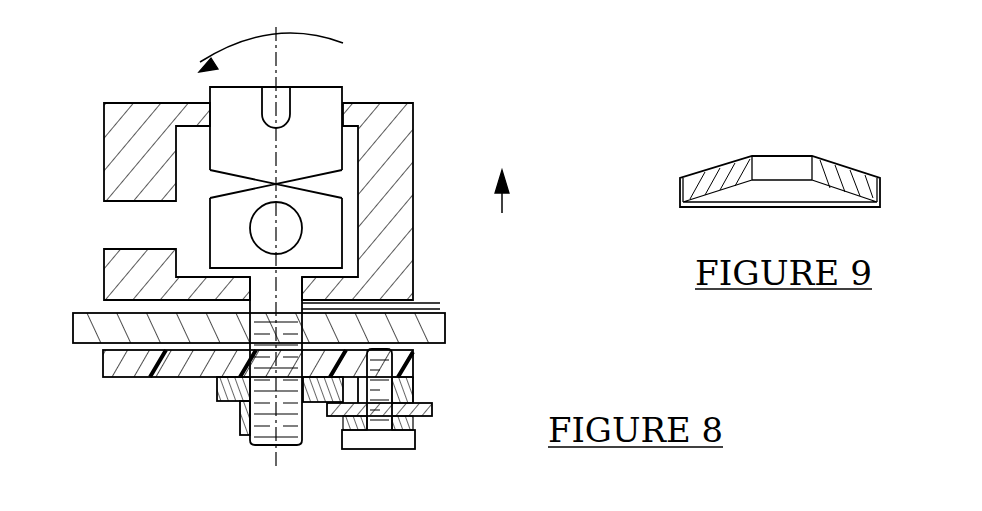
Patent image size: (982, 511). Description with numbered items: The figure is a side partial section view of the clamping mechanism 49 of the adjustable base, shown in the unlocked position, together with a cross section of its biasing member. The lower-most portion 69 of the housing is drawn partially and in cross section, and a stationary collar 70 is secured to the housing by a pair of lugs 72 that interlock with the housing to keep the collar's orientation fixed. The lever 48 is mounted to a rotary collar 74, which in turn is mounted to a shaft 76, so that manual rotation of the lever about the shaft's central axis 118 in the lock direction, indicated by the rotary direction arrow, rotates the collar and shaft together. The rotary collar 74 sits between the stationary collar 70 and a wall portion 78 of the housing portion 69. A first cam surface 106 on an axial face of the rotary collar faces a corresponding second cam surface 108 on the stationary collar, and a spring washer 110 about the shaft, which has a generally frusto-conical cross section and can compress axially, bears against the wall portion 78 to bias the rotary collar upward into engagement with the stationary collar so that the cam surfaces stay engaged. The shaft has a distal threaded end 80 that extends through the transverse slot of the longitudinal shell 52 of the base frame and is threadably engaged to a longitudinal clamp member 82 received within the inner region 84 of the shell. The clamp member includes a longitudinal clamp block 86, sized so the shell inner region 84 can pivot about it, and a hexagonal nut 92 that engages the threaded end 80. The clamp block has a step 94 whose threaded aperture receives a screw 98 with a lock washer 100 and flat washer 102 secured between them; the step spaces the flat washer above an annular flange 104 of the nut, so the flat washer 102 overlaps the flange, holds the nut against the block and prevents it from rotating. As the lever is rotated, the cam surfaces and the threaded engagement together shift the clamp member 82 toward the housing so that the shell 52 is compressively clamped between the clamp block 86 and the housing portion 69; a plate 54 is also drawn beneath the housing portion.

In FIG. 8, the clamping mechanism 49 is at (148, 35).
In FIG. 8, the central axis 118 is at (288, 47).
In FIG. 8, the lugs 72 is at (262, 107).
In FIG. 8, the stationary collar 70 is at (320, 87).
In FIG. 8, the lower-most portion of the housing 69 is at (413, 110).
In FIG. 8, the first cam surface 106 is at (220, 196).
In FIG. 8, the second cam surface 108 is at (345, 180).
In FIG. 8, the lever 48 is at (250, 228).
In FIG. 8, the rotary collar 74 is at (343, 218).
In FIG. 8, the spring washer 110 is at (210, 268).
In FIG. 9, the spring washer 110 is at (796, 126).
In FIG. 8, the wall portion 78 is at (413, 282).
In FIG. 8, the top plate 54 is at (90, 313).
In FIG. 8, the shaft 76 is at (440, 309).
In FIG. 8, the longitudinal shell 52 is at (445, 331).
In FIG. 8, the inner region 84 is at (100, 347).
In FIG. 8, the longitudinal clamp member 82 is at (430, 362).
In FIG. 8, the longitudinal clamp block 86 is at (113, 378).
In FIG. 8, the step 94 is at (413, 396).
In FIG. 8, the annular flange 104 is at (220, 392).
In FIG. 8, the flat washer 102 is at (432, 410).
In FIG. 8, the hexagonal nut 92 is at (240, 420).
In FIG. 8, the lock washer 100 is at (415, 432).
In FIG. 8, the distal threaded end 80 is at (262, 445).
In FIG. 8, the screw 98 is at (415, 446).